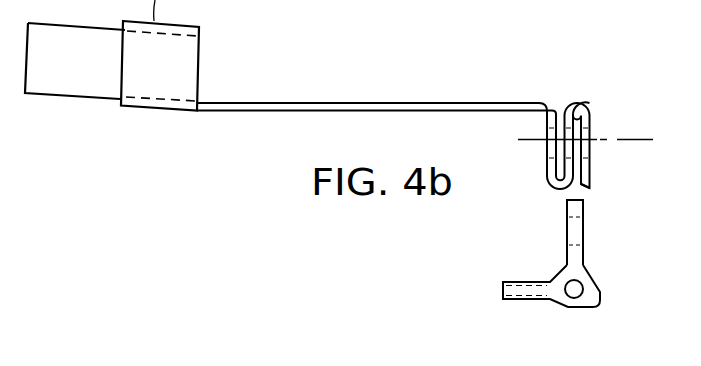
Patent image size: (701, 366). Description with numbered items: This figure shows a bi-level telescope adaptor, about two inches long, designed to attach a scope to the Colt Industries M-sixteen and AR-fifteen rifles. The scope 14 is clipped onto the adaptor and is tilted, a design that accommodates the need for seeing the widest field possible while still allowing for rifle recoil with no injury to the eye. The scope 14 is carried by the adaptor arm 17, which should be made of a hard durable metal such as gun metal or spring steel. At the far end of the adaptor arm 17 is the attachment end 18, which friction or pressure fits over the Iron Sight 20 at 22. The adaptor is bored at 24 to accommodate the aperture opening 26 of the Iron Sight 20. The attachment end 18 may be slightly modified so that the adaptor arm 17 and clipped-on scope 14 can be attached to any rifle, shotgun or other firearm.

The scope 14 is at (85, 98).
The adaptor arm 17 is at (280, 103).
The attachment end 18 is at (574, 101).
The Iron Sight 20 is at (600, 303).
The fitting location 22 is at (575, 192).
The bore 24 is at (589, 137).
The aperture opening 26 is at (583, 235).